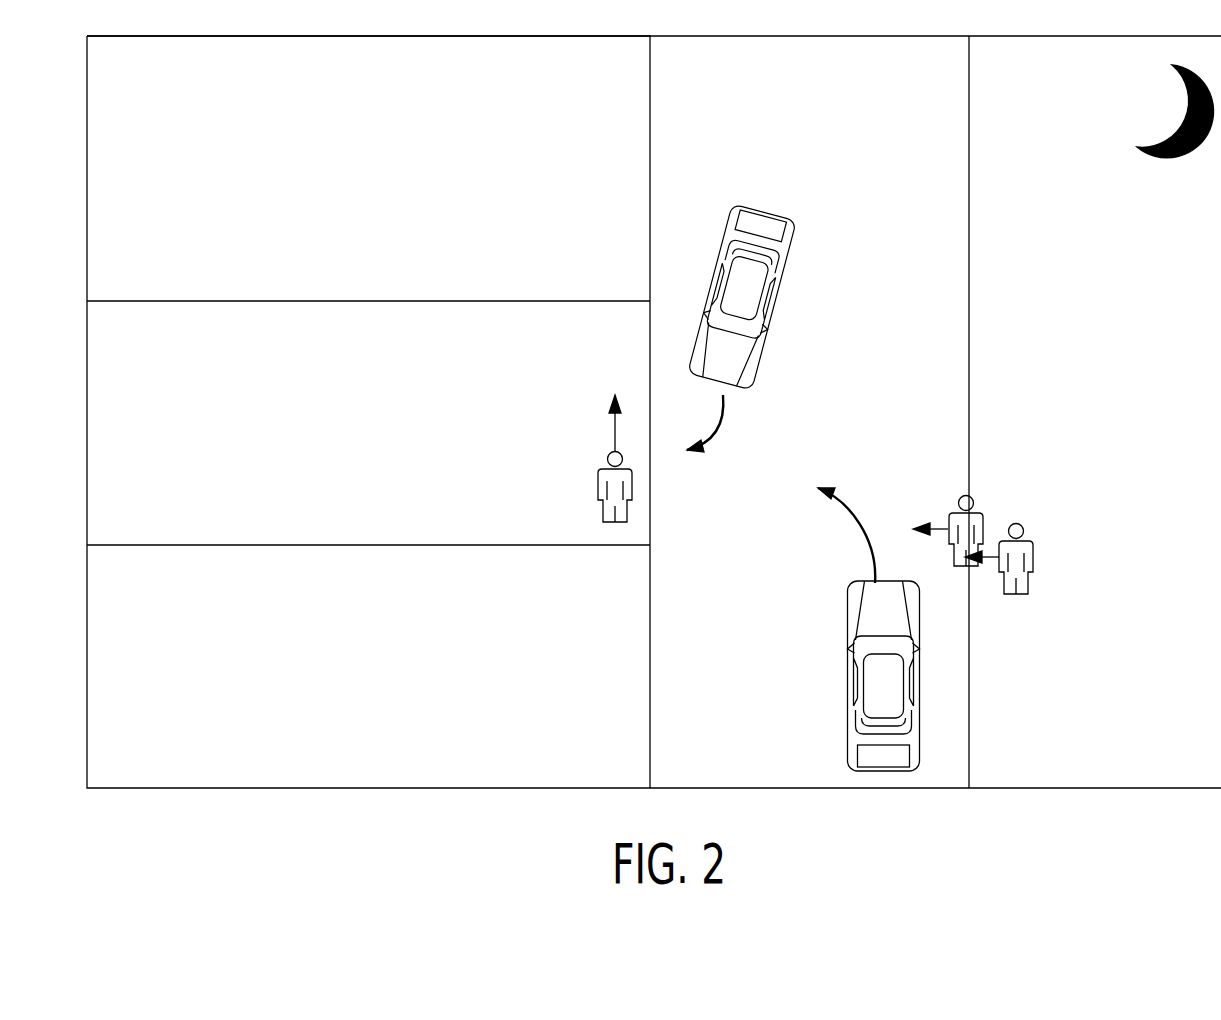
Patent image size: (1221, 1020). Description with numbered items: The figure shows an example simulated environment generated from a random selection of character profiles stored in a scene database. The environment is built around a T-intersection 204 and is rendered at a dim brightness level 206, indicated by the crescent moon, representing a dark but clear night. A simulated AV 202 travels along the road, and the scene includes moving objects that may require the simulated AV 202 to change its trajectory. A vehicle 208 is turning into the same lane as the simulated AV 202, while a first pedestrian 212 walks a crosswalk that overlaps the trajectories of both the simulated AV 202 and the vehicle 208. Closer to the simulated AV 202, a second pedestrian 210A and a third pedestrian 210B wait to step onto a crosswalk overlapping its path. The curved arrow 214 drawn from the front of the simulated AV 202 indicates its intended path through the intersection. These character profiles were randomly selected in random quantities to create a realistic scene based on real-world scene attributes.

The simulated AV 202 is at (849, 686).
The T-intersection 204 is at (650, 598).
The dim brightness level 206 is at (1140, 150).
The vehicle 208 is at (710, 278).
The second pedestrian 210A is at (975, 505).
The third pedestrian 210B is at (1027, 535).
The first pedestrian 212 is at (600, 478).
The planned trajectory arrow 214 is at (858, 516).